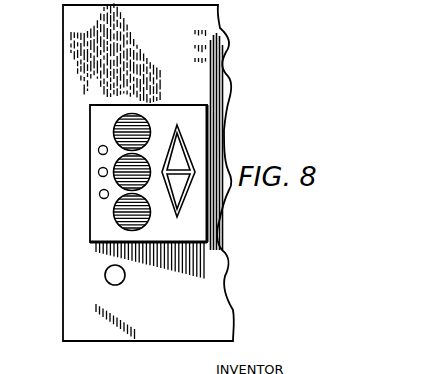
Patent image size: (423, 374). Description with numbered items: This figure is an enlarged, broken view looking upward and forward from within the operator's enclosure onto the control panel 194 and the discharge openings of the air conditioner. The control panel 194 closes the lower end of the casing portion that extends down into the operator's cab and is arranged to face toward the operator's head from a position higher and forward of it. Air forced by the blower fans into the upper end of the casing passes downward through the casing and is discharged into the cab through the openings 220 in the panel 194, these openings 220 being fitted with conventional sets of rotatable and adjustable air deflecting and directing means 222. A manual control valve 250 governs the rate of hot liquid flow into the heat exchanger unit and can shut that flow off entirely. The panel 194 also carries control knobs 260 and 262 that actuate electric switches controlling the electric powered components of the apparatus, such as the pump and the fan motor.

The control panel 194 is at (80, 322).
The openings 220 is at (149, 124).
The air deflecting and directing means 222 is at (130, 186).
The manual control valve 250 is at (113, 285).
The control knob 260 is at (98, 152).
The control knob 262 is at (100, 197).